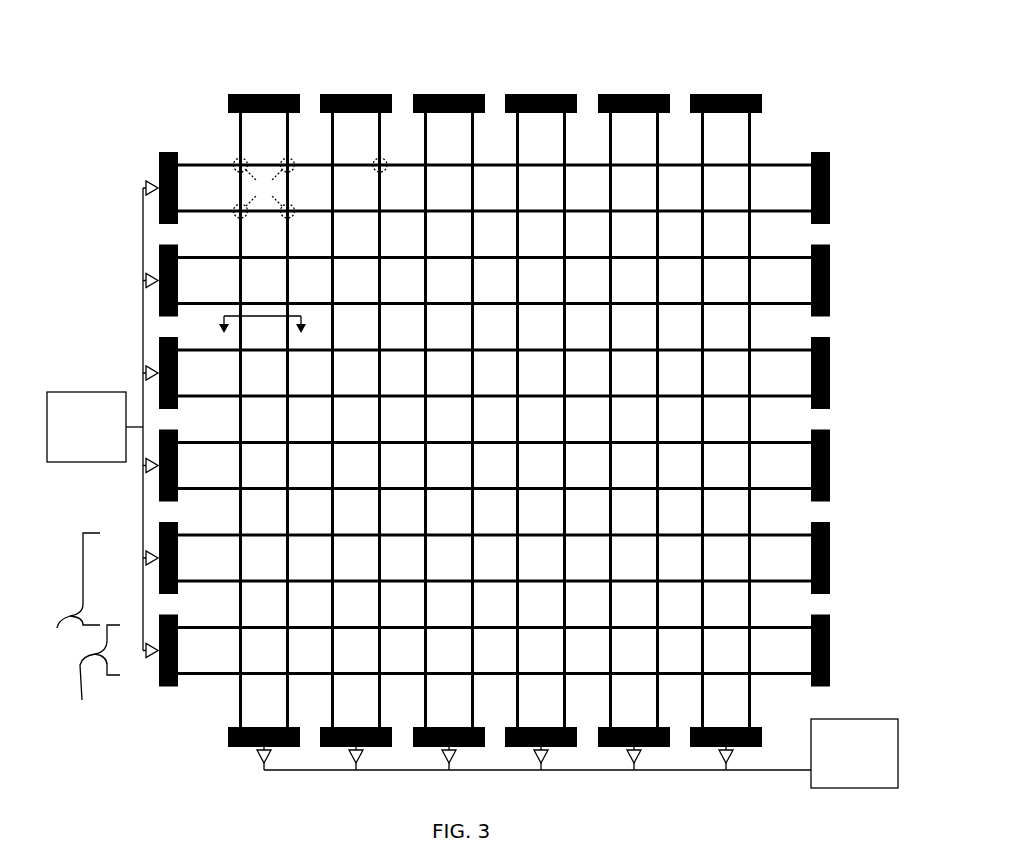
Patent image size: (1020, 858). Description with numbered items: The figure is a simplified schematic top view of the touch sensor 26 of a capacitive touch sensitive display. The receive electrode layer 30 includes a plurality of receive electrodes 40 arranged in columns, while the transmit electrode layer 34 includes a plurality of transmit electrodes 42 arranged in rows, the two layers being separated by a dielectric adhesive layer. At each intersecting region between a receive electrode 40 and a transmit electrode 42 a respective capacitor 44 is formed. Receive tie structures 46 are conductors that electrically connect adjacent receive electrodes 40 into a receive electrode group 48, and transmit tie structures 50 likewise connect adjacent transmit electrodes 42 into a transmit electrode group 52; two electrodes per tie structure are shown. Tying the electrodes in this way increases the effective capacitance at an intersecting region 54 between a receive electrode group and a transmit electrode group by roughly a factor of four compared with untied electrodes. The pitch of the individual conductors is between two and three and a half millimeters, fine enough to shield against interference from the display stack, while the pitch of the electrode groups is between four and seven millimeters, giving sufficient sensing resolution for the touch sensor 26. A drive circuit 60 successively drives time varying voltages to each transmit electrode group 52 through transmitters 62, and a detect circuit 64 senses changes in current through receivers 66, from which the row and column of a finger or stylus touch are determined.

The touch sensor 26 is at (343, 30).
The receive electrode layer 30 is at (730, 29).
The transmit electrode layer 34 is at (68, 147).
The receive electrode 40 is at (703, 147).
The transmit electrode 42 is at (211, 210).
The capacitor 44 is at (387, 170).
The receive tie structure 46 is at (690, 97).
The receive electrode group 48 is at (719, 70).
The transmit tie structure 50 is at (155, 186).
The transmit electrode group 52 is at (133, 187).
The intersecting region 54 is at (264, 188).
The drive circuit 60 is at (90, 392).
The transmitter 62 is at (150, 558).
The detect circuit 64 is at (862, 788).
The receiver 66 is at (640, 760).